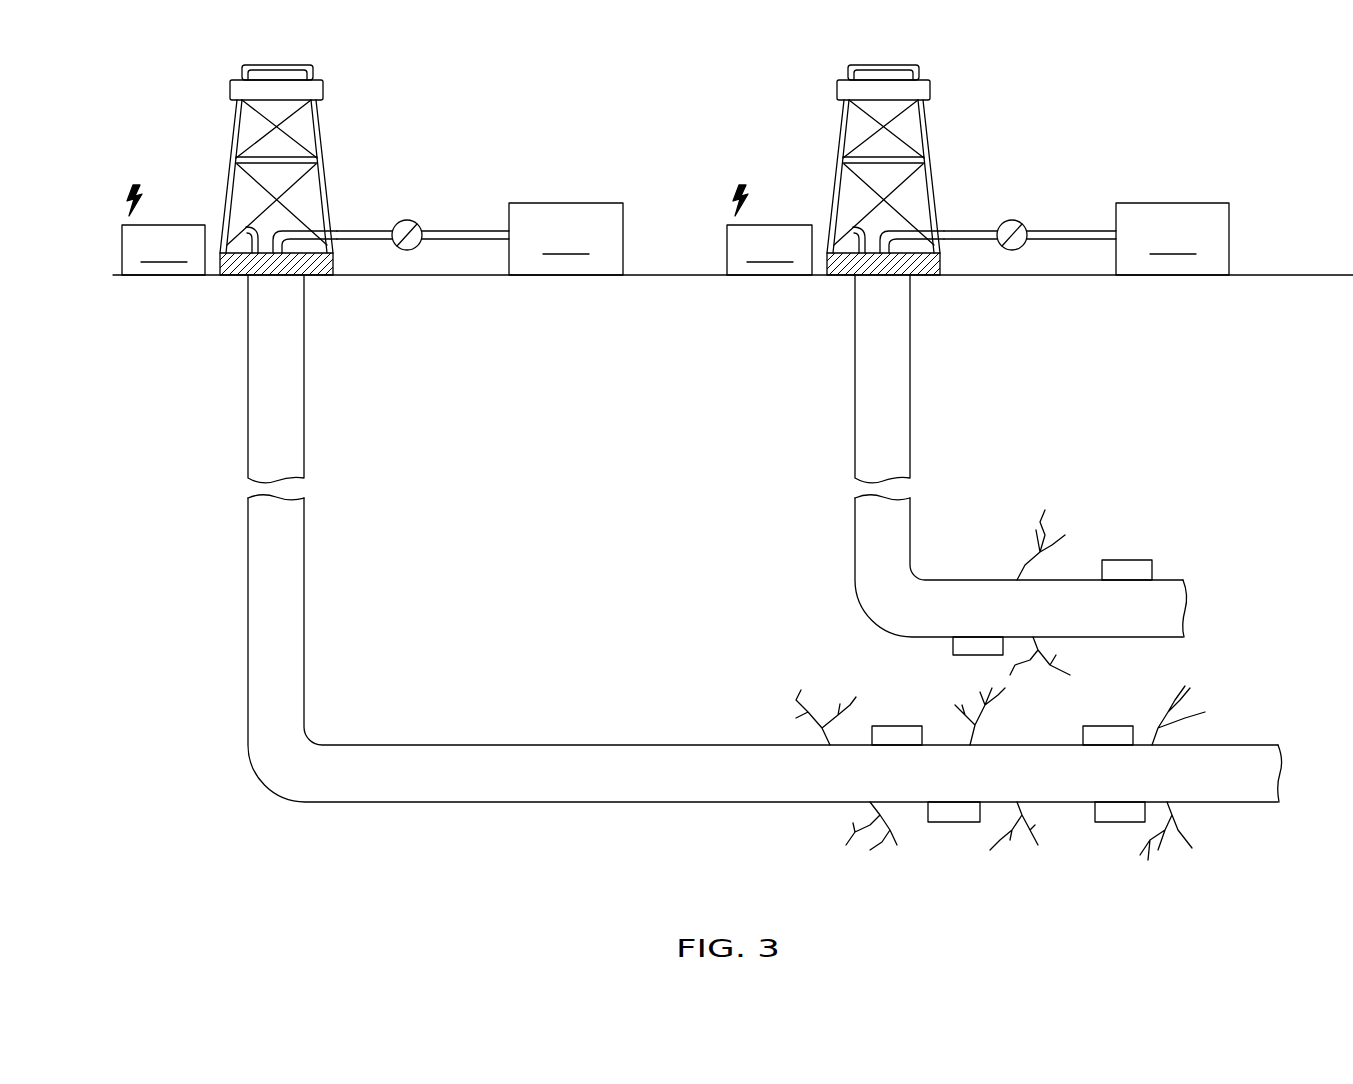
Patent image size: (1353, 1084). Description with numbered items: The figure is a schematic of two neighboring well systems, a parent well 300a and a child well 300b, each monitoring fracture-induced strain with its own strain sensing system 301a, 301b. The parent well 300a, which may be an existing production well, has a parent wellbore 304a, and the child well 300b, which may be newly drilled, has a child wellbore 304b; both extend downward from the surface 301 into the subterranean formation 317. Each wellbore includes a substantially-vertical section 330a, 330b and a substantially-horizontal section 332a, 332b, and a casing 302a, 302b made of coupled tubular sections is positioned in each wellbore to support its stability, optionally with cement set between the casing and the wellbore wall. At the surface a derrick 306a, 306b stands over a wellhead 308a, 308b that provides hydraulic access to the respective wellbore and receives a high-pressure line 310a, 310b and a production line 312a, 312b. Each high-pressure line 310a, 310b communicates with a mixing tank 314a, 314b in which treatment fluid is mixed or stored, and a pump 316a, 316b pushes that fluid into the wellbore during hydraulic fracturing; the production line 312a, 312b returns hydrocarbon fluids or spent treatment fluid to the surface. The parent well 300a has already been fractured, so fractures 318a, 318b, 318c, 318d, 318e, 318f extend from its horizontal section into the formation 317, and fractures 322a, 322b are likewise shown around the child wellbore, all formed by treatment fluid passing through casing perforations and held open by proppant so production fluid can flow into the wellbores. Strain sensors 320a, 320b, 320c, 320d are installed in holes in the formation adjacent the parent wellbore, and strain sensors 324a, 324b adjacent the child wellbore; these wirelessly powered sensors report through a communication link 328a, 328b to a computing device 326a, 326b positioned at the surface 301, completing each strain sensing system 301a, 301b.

The parent well 300a is at (199, 118).
The child well 300b is at (806, 118).
The surface 301 is at (641, 275).
The strain sensing system 301a is at (989, 885).
The strain sensing system 301b is at (1189, 524).
The casing 302a is at (248, 539).
The casing 302b is at (855, 543).
The parent wellbore 304a is at (305, 456).
The child wellbore 304b is at (913, 456).
The derrick 306a is at (311, 93).
The derrick 306b is at (918, 93).
The wellhead 308a is at (318, 262).
The wellhead 308b is at (925, 262).
The high-pressure line 310a is at (366, 231).
The high-pressure line 310b is at (973, 231).
The production line 312a is at (255, 224).
The production line 312b is at (862, 224).
The mixing tank 314a is at (566, 239).
The mixing tank 314b is at (1172, 239).
The pump 316a is at (408, 220).
The pump 316b is at (1015, 220).
The subterranean formation 317 is at (594, 404).
The fracture 318a is at (799, 700).
The fracture 318b is at (857, 846).
The fracture 318c is at (996, 716).
The fracture 318d is at (1017, 858).
The fracture 318e is at (1201, 705).
The fracture 318f is at (1171, 858).
The strain sensor 320a is at (894, 740).
The strain sensor 320b is at (955, 812).
The strain sensor 320c is at (1110, 738).
The strain sensor 320d is at (1120, 812).
The fracture 322a is at (1061, 509).
The fracture 322b is at (1061, 659).
The strain sensor 324a is at (976, 649).
The strain sensor 324b is at (1126, 572).
The computing device 326a is at (163, 250).
The computing device 326b is at (769, 250).
The communication link 328a is at (114, 200).
The communication link 328b is at (719, 200).
The substantially-vertical section 330a is at (248, 331).
The substantially-vertical section 330b is at (905, 406).
The substantially-horizontal section 332a is at (1229, 786).
The substantially-horizontal section 332b is at (1179, 598).